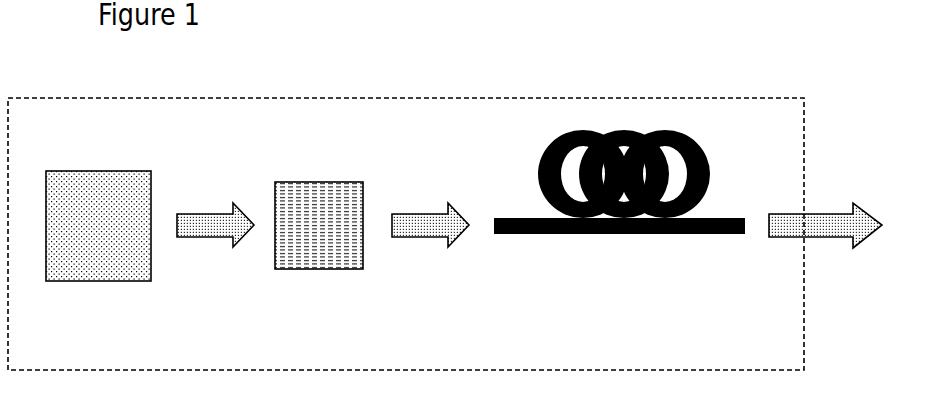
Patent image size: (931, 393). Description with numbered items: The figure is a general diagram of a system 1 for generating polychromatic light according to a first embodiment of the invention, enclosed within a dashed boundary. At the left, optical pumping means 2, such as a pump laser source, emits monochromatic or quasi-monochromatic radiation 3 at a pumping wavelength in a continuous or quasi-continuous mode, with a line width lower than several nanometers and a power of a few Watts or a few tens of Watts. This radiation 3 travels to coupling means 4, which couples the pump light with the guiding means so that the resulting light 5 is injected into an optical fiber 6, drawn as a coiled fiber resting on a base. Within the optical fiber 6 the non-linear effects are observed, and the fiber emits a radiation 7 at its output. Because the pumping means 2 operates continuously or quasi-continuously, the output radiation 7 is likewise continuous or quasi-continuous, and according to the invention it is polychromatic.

The system 1 is at (428, 98).
The optical pumping means 2 is at (118, 262).
The monochromatic or quasi-monochromatic radiation 3 is at (222, 225).
The coupling means 4 is at (336, 252).
The resulting light 5 is at (437, 225).
The optical fiber 6 is at (642, 234).
The radiation 7 is at (827, 225).